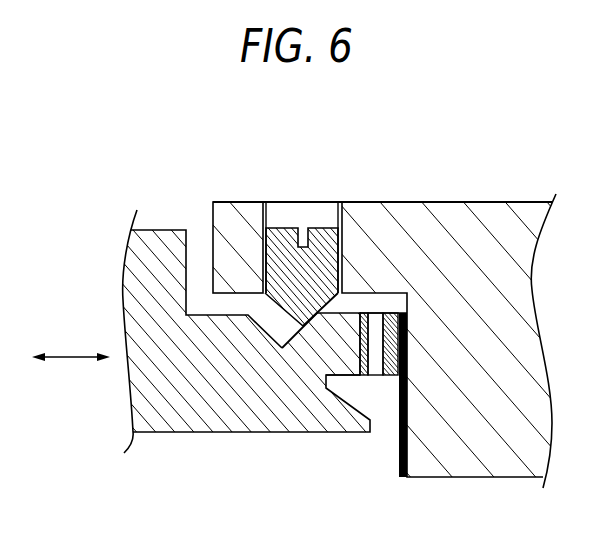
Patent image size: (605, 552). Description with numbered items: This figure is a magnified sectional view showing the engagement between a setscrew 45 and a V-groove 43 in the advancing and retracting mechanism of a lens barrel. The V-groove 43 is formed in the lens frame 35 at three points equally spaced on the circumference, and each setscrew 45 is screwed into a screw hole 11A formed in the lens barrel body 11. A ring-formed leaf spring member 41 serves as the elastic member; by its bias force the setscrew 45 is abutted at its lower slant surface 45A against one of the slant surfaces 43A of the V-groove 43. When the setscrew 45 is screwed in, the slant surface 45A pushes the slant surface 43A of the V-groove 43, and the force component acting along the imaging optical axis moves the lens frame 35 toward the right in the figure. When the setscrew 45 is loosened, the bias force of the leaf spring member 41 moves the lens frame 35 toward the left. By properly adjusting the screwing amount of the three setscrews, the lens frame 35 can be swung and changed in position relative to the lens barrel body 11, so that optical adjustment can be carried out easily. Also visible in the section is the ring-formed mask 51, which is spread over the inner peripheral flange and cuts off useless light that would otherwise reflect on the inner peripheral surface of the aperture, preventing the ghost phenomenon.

The lens barrel body 11 is at (408, 223).
The screw hole 11A is at (277, 202).
The lens frame 35 is at (157, 258).
The leaf spring member 41 is at (363, 376).
The V-groove 43 is at (266, 318).
The slant surface of the V-groove 43A is at (300, 332).
The setscrew 45 is at (330, 227).
The lower slant surface of the setscrew 45A is at (305, 330).
The mask 51 is at (401, 448).